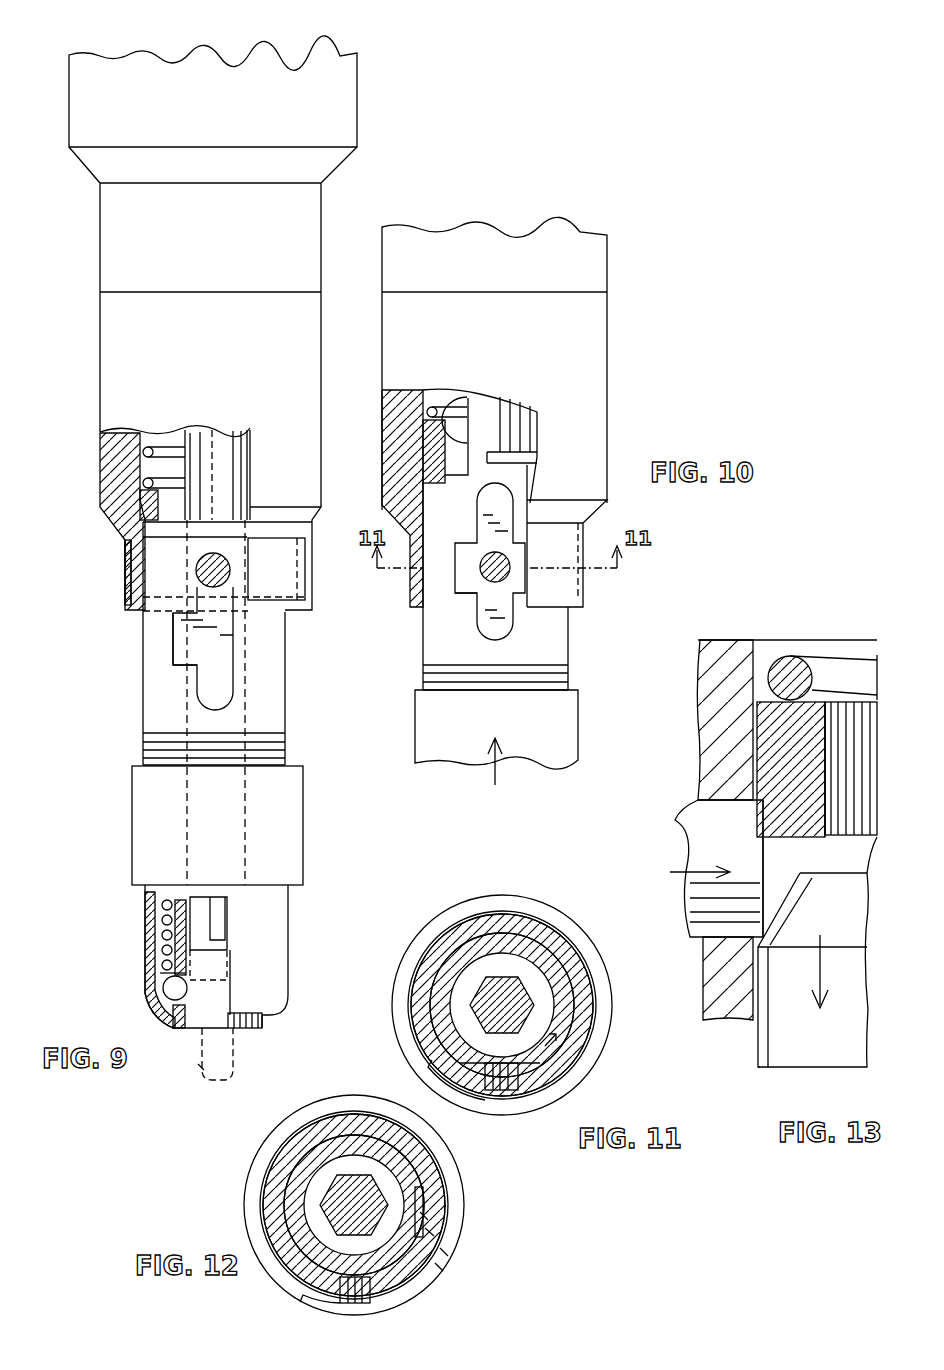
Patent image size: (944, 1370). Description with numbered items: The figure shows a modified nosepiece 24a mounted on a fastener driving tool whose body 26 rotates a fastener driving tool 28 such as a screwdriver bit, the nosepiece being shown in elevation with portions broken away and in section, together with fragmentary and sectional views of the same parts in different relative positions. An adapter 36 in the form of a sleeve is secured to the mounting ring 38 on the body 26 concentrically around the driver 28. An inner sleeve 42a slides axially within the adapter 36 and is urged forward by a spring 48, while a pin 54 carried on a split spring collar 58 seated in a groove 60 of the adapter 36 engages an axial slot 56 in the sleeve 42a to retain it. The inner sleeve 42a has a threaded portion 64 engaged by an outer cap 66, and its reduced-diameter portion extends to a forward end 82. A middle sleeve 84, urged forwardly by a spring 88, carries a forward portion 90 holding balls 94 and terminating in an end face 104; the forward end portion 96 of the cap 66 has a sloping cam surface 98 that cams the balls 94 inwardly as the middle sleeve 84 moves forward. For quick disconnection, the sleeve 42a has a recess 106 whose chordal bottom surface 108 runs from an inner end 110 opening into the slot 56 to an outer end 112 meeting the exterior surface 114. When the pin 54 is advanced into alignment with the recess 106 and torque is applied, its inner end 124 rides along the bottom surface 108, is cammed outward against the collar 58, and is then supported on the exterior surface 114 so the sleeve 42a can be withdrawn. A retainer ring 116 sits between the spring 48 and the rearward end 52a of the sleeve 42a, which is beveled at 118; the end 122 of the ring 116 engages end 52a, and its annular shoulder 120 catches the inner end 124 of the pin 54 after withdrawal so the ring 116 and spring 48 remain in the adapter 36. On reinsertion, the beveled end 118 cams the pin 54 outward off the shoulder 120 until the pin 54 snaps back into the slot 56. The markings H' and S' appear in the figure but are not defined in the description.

In FIG. 9, the nosepiece 24a is at (80, 480).
In FIG. 9, the body 26 is at (353, 103).
In FIG. 11, the body 26 is at (517, 898).
In FIG. 12, the body 26 is at (250, 1175).
In FIG. 9, the fastener driving tool 28 is at (228, 432).
In FIG. 10, the fastener driving tool 28 is at (518, 410).
In FIG. 9, the adapter 36 is at (100, 338).
In FIG. 11, the adapter 36 is at (565, 960).
In FIG. 12, the adapter 36 is at (278, 1219).
In FIG. 13, the adapter 36 is at (718, 640).
In FIG. 9, the mounting ring 38 is at (100, 217).
In FIG. 9, the inner sleeve 42a is at (287, 698).
In FIG. 10, the inner sleeve 42a is at (570, 630).
In FIG. 11, the inner sleeve 42a is at (565, 1000).
In FIG. 12, the inner sleeve 42a is at (302, 1160).
In FIG. 13, the inner sleeve 42a is at (762, 1062).
In FIG. 9, the spring 48 is at (165, 445).
In FIG. 10, the spring 48 is at (455, 408).
In FIG. 13, the spring 48 is at (843, 660).
In FIG. 13, the rearward end 52a is at (869, 866).
In FIG. 9, the pin 54 is at (231, 571).
In FIG. 10, the pin 54 is at (512, 570).
In FIG. 11, the pin 54 is at (525, 1082).
In FIG. 12, the pin 54 is at (385, 1300).
In FIG. 13, the pin 54 is at (692, 834).
In FIG. 9, the axial slot 56 is at (235, 647).
In FIG. 10, the axial slot 56 is at (532, 521).
In FIG. 12, the axial slot 56 is at (425, 1195).
In FIG. 9, the split spring collar 58 is at (125, 585).
In FIG. 11, the split spring collar 58 is at (496, 1108).
In FIG. 12, the split spring collar 58 is at (318, 1302).
In FIG. 9, the groove 60 is at (125, 562).
In FIG. 9, the threaded portion 64 is at (285, 746).
In FIG. 9, the outer cap 66 is at (303, 828).
In FIG. 9, the forward end 82 is at (232, 945).
In FIG. 9, the middle sleeve 84 is at (175, 938).
In FIG. 9, the spring 88 is at (162, 910).
In FIG. 9, the forward portion 90 is at (265, 1022).
In FIG. 9, the ball 94 is at (163, 988).
In FIG. 9, the forward end portion 96 is at (165, 1028).
In FIG. 9, the cam surface 98 is at (165, 1010).
In FIG. 9, the end face 104 is at (243, 1032).
In FIG. 9, the recess 106 is at (178, 668).
In FIG. 10, the recess 106 is at (460, 598).
In FIG. 12, the recess 106 is at (432, 1232).
In FIG. 9, the bottom surface 108 is at (178, 650).
In FIG. 10, the bottom surface 108 is at (455, 578).
In FIG. 11, the bottom surface 108 is at (502, 1005).
In FIG. 12, the bottom surface 108 is at (440, 1240).
In FIG. 12, the inner end 110 is at (428, 1218).
In FIG. 9, the outer end 112 is at (173, 631).
In FIG. 10, the outer end 112 is at (447, 555).
In FIG. 12, the outer end 112 is at (446, 1252).
In FIG. 11, the exterior surface 114 is at (560, 1036).
In FIG. 12, the exterior surface 114 is at (440, 1268).
In FIG. 9, the retainer ring 116 is at (140, 505).
In FIG. 10, the retainer ring 116 is at (480, 420).
In FIG. 13, the retainer ring 116 is at (858, 750).
In FIG. 9, the beveled end 118 is at (228, 530).
In FIG. 10, the beveled end 118 is at (530, 462).
In FIG. 13, the beveled end 118 is at (858, 906).
In FIG. 13, the annular shoulder 120 is at (762, 795).
In FIG. 13, the end 122 is at (830, 822).
In FIG. 11, the inner end 124 is at (503, 1094).
In FIG. 13, the inner end 124 is at (768, 858).
In FIG. 9, the stroke height H' is at (149, 964).
In FIG. 9, the stroke S' is at (177, 1082).